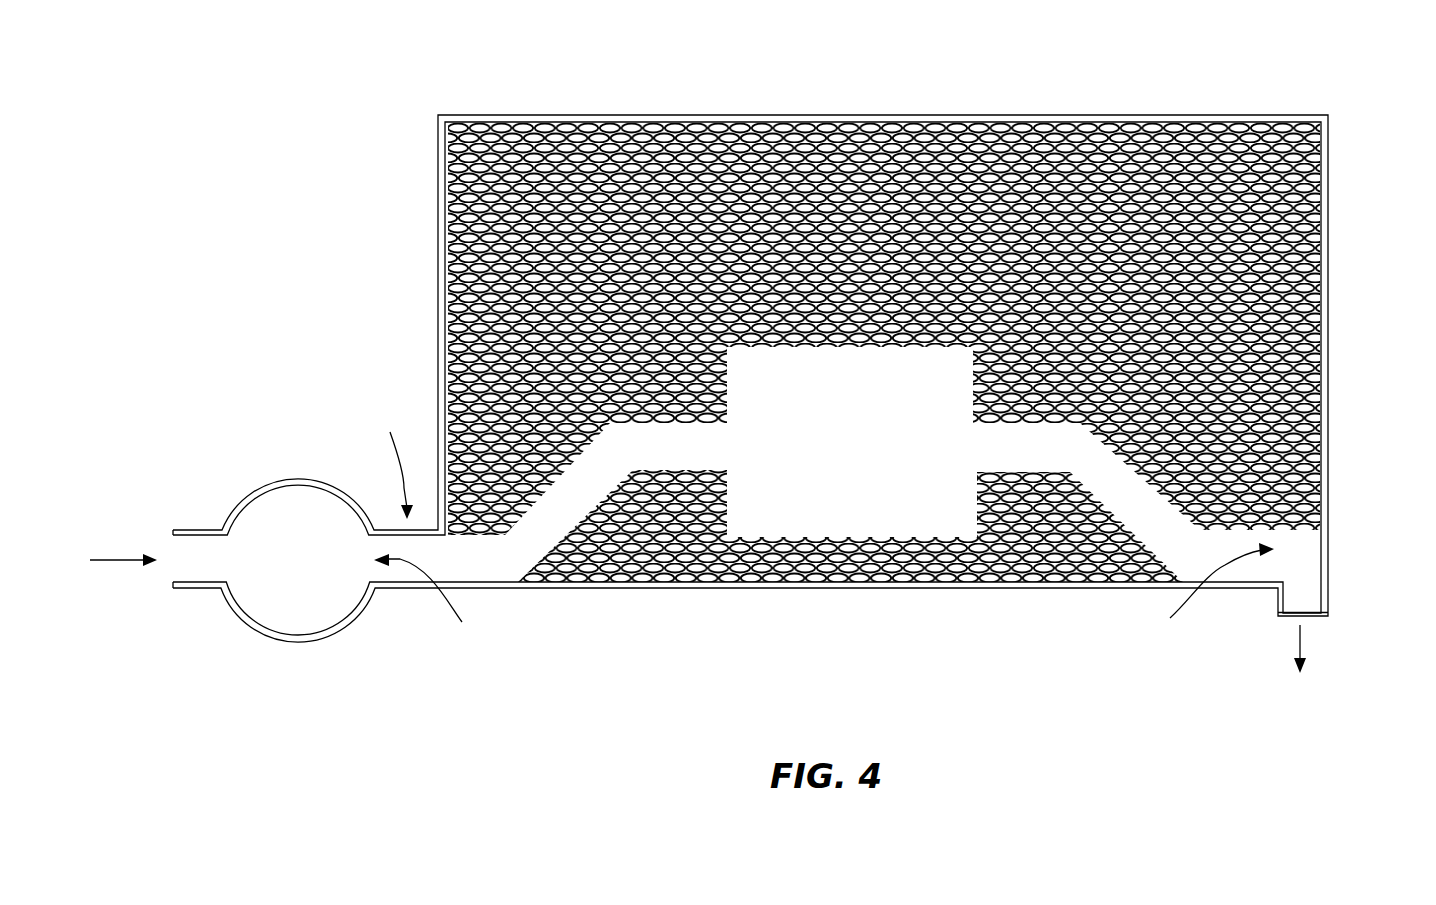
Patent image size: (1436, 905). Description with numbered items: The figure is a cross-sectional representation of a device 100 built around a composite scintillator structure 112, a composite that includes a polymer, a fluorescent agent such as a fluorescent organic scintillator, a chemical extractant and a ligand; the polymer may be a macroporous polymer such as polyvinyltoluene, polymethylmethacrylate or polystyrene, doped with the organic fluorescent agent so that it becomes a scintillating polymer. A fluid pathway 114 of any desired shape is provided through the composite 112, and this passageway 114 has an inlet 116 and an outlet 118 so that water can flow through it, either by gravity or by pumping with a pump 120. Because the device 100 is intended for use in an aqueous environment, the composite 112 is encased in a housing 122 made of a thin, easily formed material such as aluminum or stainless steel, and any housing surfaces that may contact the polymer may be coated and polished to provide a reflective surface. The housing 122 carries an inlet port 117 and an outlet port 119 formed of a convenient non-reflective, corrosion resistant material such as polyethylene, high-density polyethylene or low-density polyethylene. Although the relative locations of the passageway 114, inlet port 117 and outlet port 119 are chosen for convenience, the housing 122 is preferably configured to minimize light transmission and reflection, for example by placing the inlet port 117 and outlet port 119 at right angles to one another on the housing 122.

The device 100 is at (338, 240).
The composite scintillator structure 112 is at (634, 176).
The fluid pathway 114 is at (842, 500).
The inlet 116 is at (449, 601).
The inlet port 117 is at (391, 463).
The outlet 118 is at (1197, 595).
The outlet port 119 is at (1330, 597).
The pump 120 is at (288, 522).
The housing 122 is at (912, 122).